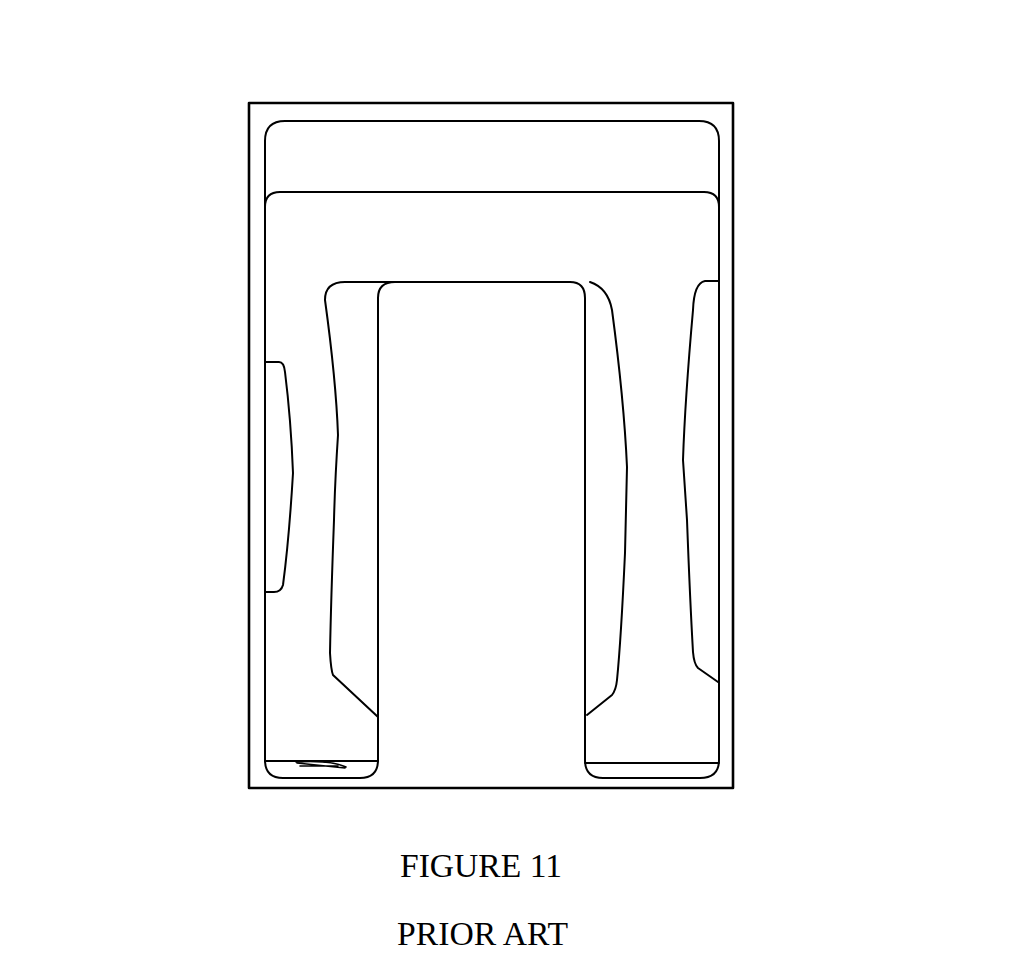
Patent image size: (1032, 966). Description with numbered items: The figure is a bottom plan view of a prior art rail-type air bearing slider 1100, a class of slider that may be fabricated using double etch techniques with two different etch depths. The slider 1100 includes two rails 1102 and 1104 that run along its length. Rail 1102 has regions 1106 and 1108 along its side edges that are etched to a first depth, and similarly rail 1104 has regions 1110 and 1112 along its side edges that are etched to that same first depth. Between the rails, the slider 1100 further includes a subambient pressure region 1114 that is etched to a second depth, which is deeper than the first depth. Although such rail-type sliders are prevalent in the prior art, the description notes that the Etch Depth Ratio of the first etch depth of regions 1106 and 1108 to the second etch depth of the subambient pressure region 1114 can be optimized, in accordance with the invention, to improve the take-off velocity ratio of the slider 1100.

The slider 1100 is at (491, 399).
The rail 1102 is at (381, 449).
The rail 1104 is at (764, 482).
The region etched to a first depth 1106 is at (187, 499).
The region etched to a first depth 1108 is at (417, 521).
The region etched to a first depth 1110 is at (787, 481).
The region etched to a first depth 1112 is at (557, 521).
The subambient pressure region 1114 is at (645, 532).